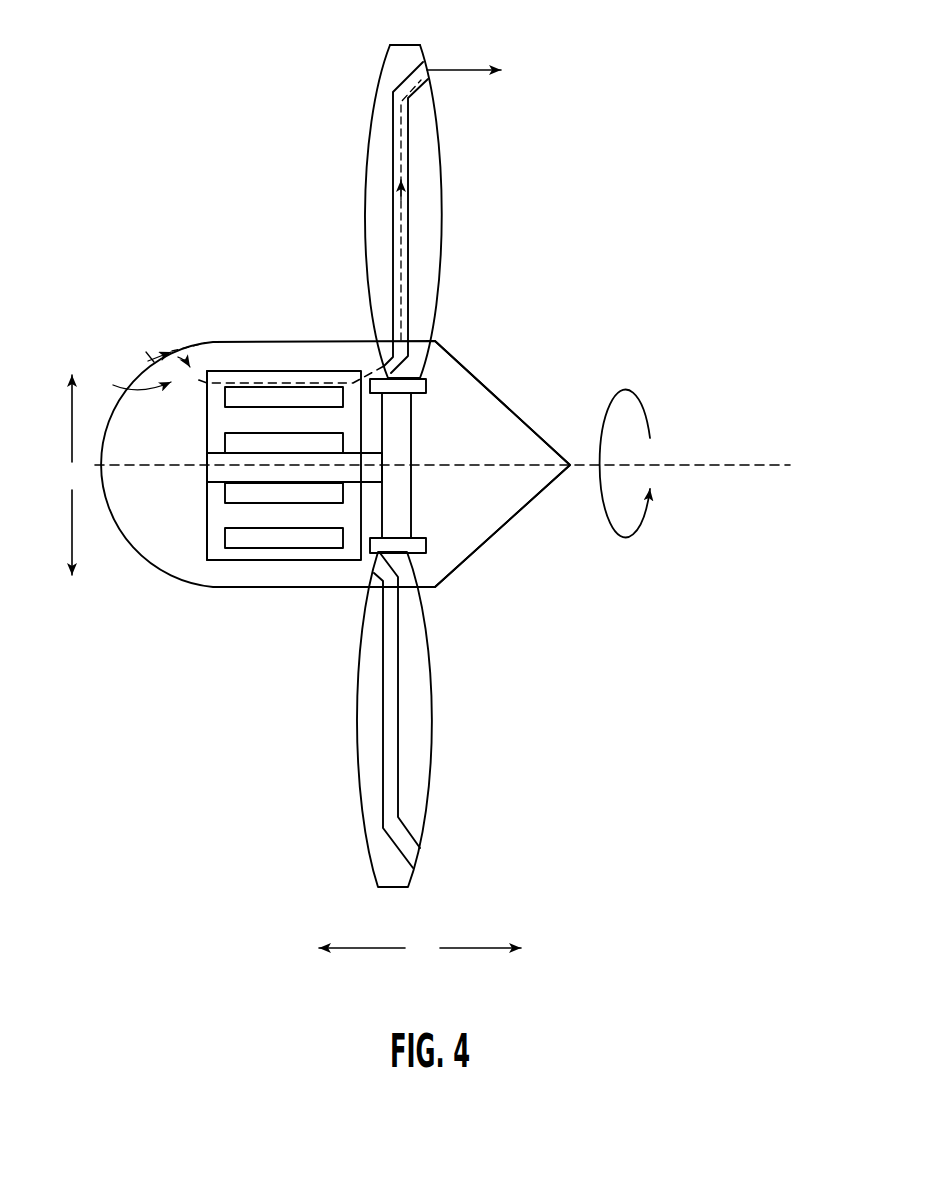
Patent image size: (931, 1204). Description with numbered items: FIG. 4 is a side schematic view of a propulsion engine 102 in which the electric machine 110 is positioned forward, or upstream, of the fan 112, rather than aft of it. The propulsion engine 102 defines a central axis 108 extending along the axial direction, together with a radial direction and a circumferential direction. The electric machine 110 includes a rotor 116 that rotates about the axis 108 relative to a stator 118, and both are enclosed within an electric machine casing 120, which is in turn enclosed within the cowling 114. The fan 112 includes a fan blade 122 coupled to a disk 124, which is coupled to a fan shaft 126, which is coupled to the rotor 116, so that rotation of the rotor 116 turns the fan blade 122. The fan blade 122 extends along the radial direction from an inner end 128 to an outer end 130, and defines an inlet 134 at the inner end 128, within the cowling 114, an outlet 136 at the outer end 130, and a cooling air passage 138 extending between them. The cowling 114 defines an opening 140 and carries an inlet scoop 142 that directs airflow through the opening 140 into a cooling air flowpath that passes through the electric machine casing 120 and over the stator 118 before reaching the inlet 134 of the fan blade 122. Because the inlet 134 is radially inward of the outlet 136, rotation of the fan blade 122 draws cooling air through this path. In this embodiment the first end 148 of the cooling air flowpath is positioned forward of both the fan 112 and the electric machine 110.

The propulsion engine 102 is at (192, 107).
The central axis 108 is at (748, 462).
The electric machine 110 is at (152, 526).
The fan 112 is at (307, 142).
The cowling 114 is at (292, 588).
The rotor 116 is at (223, 443).
The stator 118 is at (237, 538).
The electric machine casing 120 is at (205, 537).
The fan blade 122 is at (376, 88).
The disk 124 is at (427, 388).
The fan shaft 126 is at (365, 477).
The inner end 128 is at (448, 359).
The outer end 130 is at (429, 37).
The inlet 134 is at (376, 357).
The outlet 136 is at (439, 83).
The cooling air passage 138 is at (411, 232).
The opening 140 is at (205, 340).
The inlet scoop 142 is at (204, 338).
The first end 148 is at (133, 363).